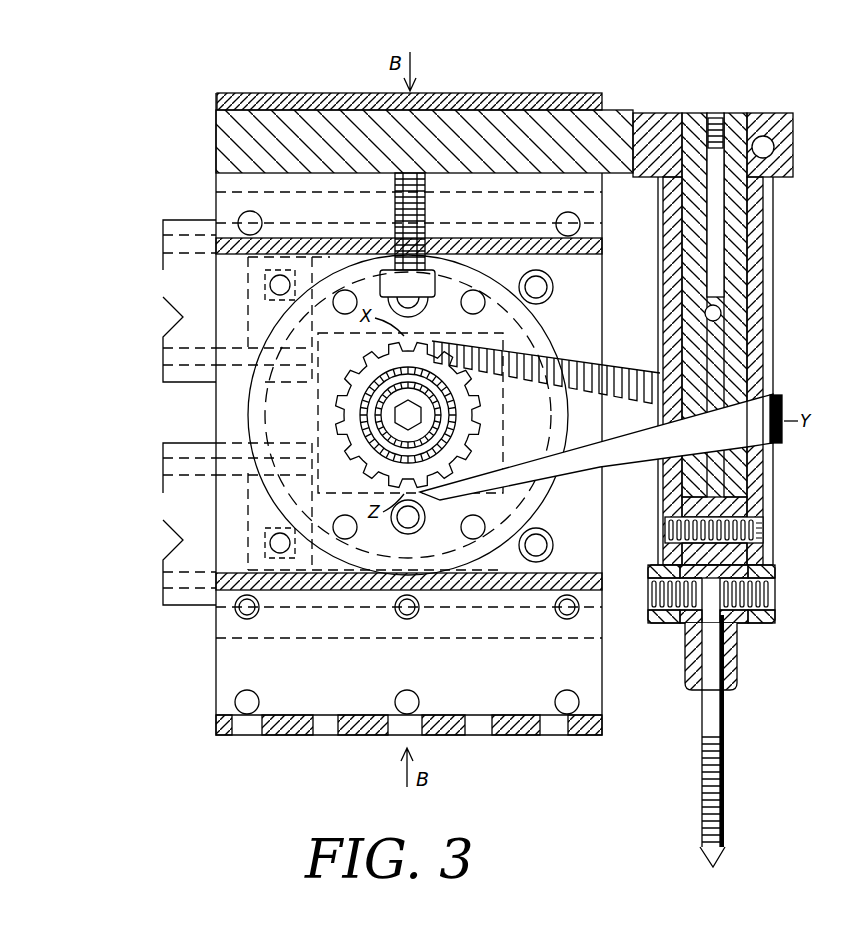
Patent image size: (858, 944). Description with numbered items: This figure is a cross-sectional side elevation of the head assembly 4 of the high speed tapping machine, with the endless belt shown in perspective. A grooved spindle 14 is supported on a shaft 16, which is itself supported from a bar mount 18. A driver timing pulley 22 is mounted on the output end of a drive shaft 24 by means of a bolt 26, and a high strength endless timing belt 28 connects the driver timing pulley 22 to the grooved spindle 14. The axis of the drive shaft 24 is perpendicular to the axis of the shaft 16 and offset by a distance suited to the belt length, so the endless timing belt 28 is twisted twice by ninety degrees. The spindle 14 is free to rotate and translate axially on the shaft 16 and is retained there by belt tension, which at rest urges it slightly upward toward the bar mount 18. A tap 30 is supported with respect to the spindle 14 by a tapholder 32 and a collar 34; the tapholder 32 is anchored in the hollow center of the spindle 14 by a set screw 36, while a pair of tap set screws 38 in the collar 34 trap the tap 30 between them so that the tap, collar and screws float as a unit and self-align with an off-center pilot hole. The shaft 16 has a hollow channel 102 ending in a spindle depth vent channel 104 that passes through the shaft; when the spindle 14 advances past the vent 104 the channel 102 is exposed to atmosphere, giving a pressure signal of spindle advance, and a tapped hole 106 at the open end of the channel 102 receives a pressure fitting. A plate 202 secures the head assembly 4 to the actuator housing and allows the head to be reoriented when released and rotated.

The head assembly 4 is at (213, 84).
The spindle 14 is at (663, 240).
The shaft 16 is at (737, 116).
The bar mount 18 is at (783, 116).
The driver timing pulley 22 is at (482, 406).
The drive shaft 24 is at (477, 428).
The bolt 26 is at (393, 352).
The endless timing belt 28 is at (776, 398).
The tap 30 is at (722, 766).
The tapholder 32 is at (736, 670).
The collar 34 is at (655, 624).
The set screw 36 is at (764, 530).
The tap set screws 38 is at (648, 592).
The hollow channel 102 is at (718, 199).
The spindle depth vent channel 104 is at (722, 316).
The tapped hole 106 is at (714, 113).
The plate 202 is at (548, 340).